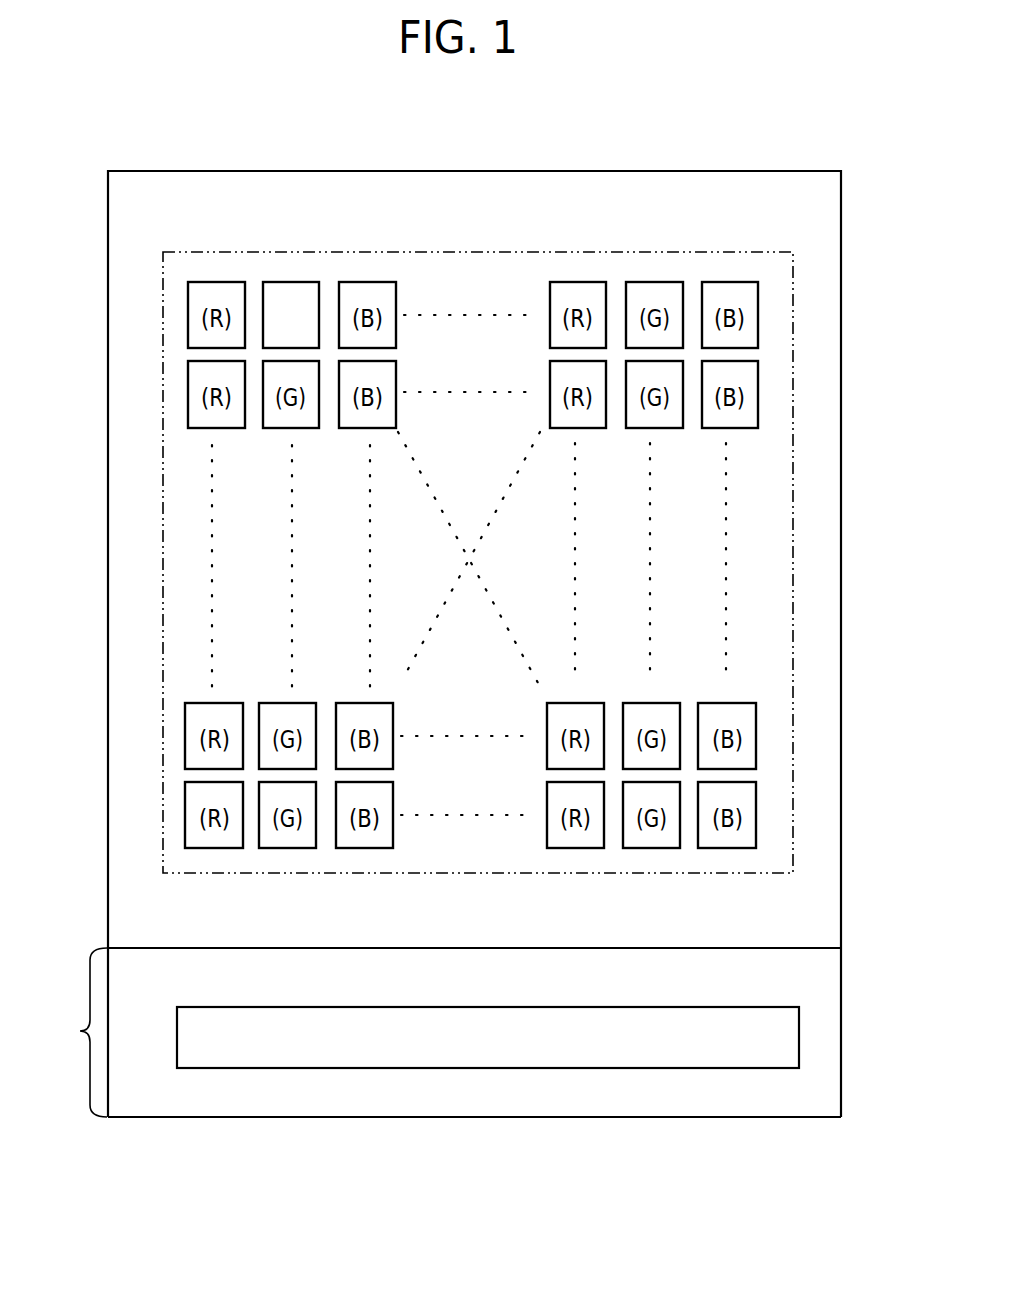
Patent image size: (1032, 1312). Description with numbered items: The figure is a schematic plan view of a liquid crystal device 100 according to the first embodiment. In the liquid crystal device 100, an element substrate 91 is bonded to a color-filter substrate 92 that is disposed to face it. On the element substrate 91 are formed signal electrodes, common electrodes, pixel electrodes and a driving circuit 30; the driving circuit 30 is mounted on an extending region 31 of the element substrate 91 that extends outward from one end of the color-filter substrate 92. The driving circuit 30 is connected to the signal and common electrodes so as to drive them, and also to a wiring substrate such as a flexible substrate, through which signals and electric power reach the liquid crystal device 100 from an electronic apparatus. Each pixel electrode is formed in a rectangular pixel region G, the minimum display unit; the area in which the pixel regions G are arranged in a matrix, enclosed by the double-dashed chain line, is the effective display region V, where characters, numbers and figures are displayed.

The liquid crystal device 100 is at (803, 139).
The element substrate 91 is at (798, 1103).
The color-filter substrate 92 is at (793, 925).
The effective display region V is at (496, 251).
The pixel region G is at (288, 292).
The extending region 31 is at (77, 1032).
The driving circuit 30 is at (423, 1069).